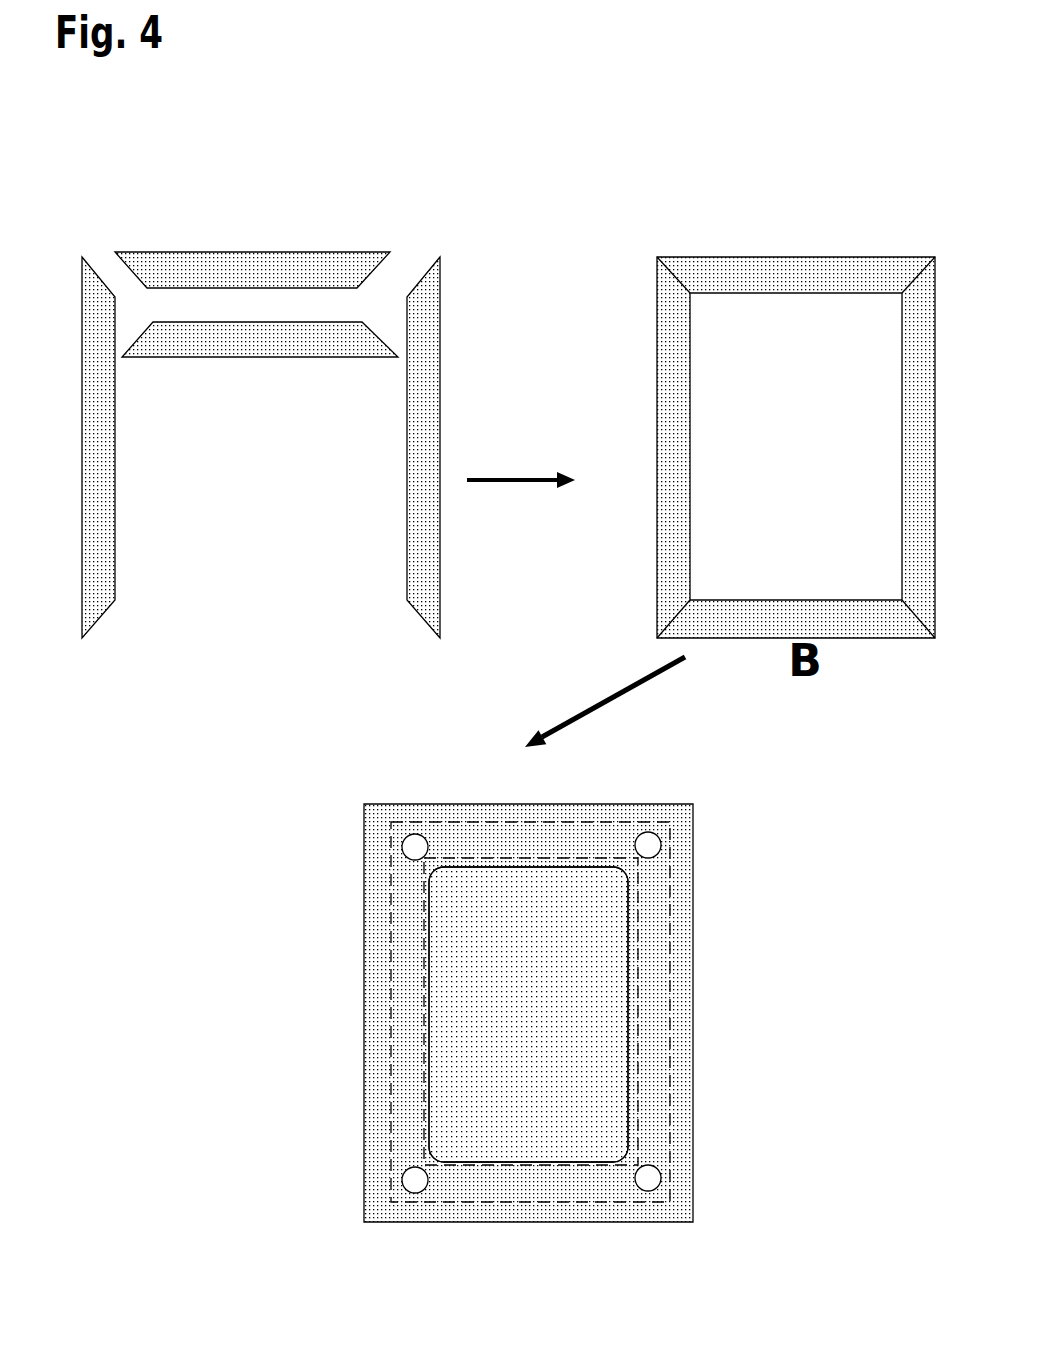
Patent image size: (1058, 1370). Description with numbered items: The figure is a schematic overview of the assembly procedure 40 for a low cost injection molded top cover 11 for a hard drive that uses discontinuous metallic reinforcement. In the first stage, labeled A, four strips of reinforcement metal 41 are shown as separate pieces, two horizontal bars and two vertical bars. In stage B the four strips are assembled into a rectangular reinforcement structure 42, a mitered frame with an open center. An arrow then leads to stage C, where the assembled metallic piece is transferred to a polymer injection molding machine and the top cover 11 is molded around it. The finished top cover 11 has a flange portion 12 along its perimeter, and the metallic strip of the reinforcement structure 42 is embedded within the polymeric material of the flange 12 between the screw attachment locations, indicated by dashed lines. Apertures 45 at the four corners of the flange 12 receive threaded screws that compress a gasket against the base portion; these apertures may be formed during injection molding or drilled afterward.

The assembly procedure 40 is at (505, 228).
The strips of reinforcement metal 41 is at (342, 267).
The rectangular reinforcement structure 42 is at (917, 498).
The apertures 45 is at (413, 838).
The flange portion 12 is at (688, 867).
The top cover 11 is at (735, 933).